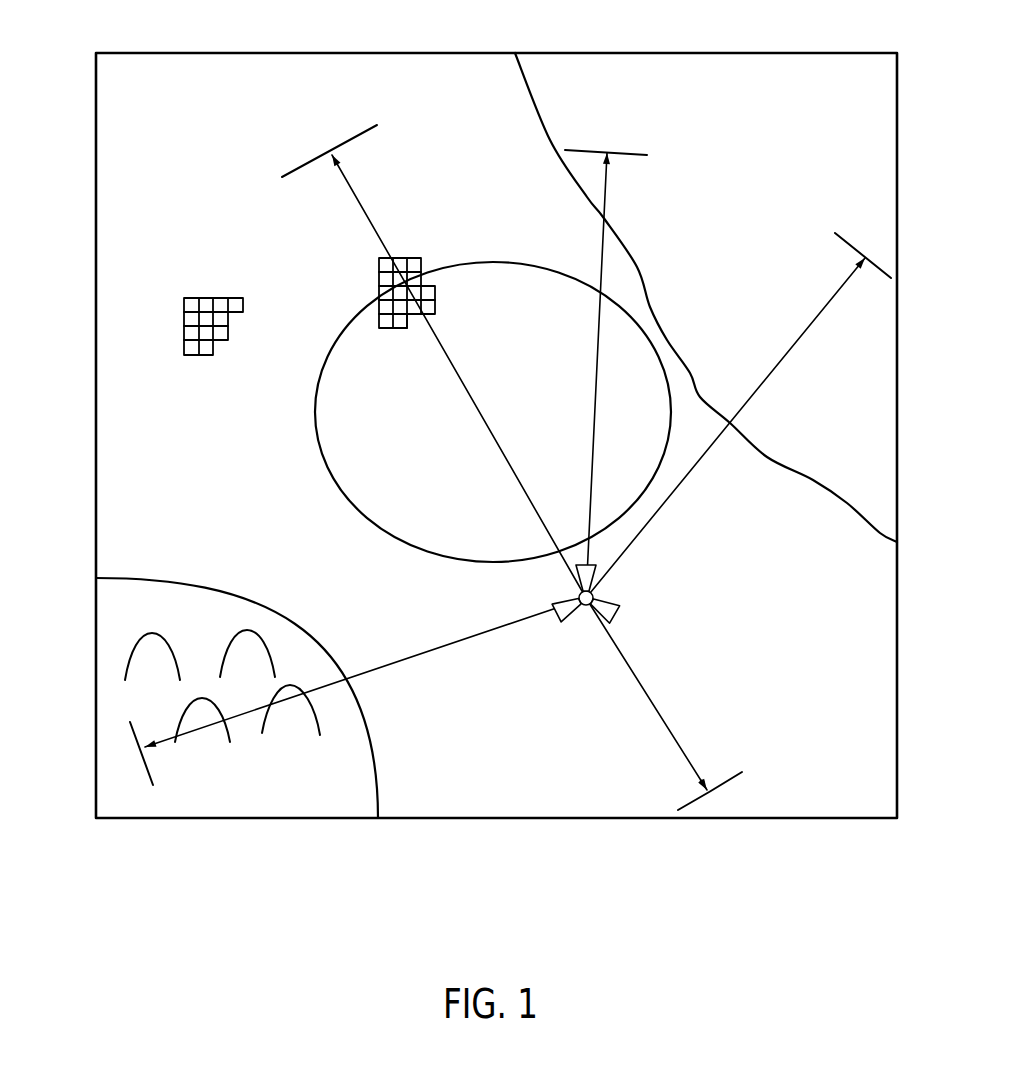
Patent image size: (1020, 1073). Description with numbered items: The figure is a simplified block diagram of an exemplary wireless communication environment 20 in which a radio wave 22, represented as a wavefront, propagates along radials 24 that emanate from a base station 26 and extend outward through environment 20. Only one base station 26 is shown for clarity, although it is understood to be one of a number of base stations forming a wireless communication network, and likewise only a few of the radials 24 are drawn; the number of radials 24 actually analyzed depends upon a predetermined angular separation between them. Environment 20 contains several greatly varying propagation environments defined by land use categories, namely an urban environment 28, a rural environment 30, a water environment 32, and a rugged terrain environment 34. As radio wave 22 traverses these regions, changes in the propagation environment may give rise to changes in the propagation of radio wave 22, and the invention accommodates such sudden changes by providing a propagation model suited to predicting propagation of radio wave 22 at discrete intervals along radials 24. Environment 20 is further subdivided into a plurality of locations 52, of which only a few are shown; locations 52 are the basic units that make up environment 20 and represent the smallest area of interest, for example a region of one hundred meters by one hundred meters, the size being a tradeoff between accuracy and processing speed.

The wireless communication environment 20 is at (793, 915).
The radio wave 22 is at (310, 160).
The radials 24 is at (368, 217).
The base station 26 is at (586, 614).
The urban environment 28 is at (316, 395).
The rural environment 30 is at (113, 193).
The water environment 32 is at (718, 73).
The rugged terrain environment 34 is at (97, 683).
The locations 52 is at (205, 298).